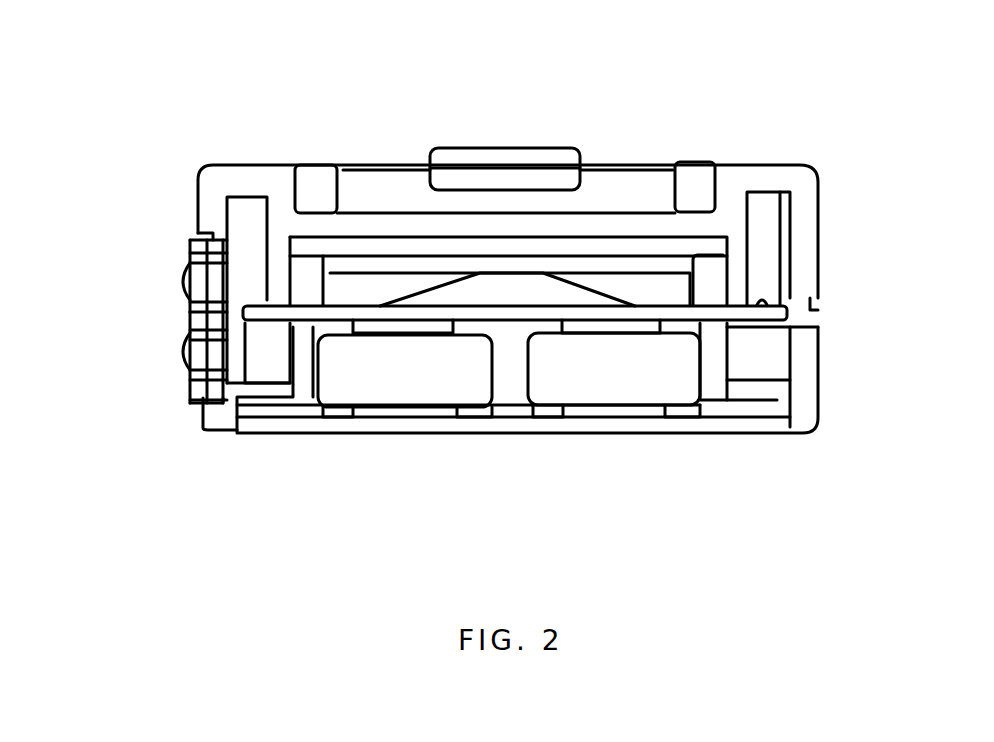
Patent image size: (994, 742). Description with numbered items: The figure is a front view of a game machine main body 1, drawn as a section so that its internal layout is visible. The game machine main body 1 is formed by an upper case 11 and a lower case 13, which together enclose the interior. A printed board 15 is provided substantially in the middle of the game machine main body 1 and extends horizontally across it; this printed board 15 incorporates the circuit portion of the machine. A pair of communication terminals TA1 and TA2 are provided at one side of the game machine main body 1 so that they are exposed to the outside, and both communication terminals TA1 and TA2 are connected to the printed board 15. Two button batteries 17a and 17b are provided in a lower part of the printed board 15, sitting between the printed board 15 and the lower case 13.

The game machine main body 1 is at (763, 435).
The upper case 11 is at (772, 175).
The lower case 13 is at (203, 428).
The printed board 15 is at (407, 312).
The button battery 17a is at (438, 383).
The button battery 17b is at (648, 388).
The communication terminal TA1 is at (182, 282).
The communication terminal TA2 is at (182, 353).